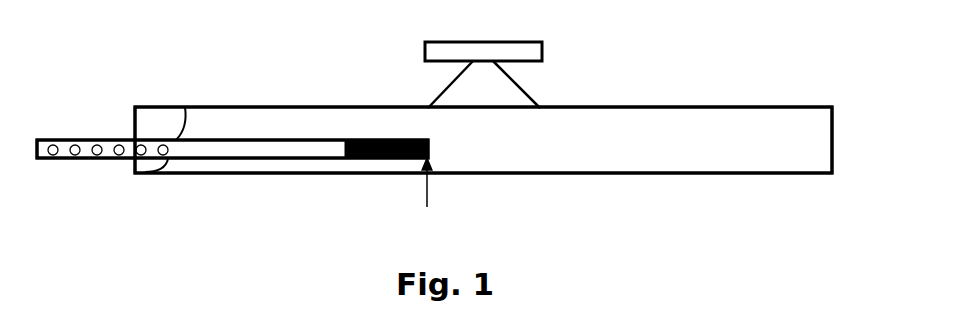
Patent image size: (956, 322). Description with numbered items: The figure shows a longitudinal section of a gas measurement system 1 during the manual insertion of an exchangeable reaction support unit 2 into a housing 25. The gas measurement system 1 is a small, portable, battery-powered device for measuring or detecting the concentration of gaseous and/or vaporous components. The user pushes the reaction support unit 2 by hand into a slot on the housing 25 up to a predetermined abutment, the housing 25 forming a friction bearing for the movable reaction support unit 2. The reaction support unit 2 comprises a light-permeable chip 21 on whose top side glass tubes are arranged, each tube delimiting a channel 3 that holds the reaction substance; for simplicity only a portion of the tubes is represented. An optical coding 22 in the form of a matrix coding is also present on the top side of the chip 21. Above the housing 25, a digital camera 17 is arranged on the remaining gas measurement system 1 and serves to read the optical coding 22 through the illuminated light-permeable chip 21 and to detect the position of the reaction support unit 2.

The gas measurement system 1 is at (727, 186).
The housing 25 is at (737, 107).
The reaction support unit 2 is at (77, 140).
The chip 21 is at (232, 149).
The channel 3 is at (92, 160).
The optical coding 22 is at (370, 138).
The digital camera 17 is at (532, 52).